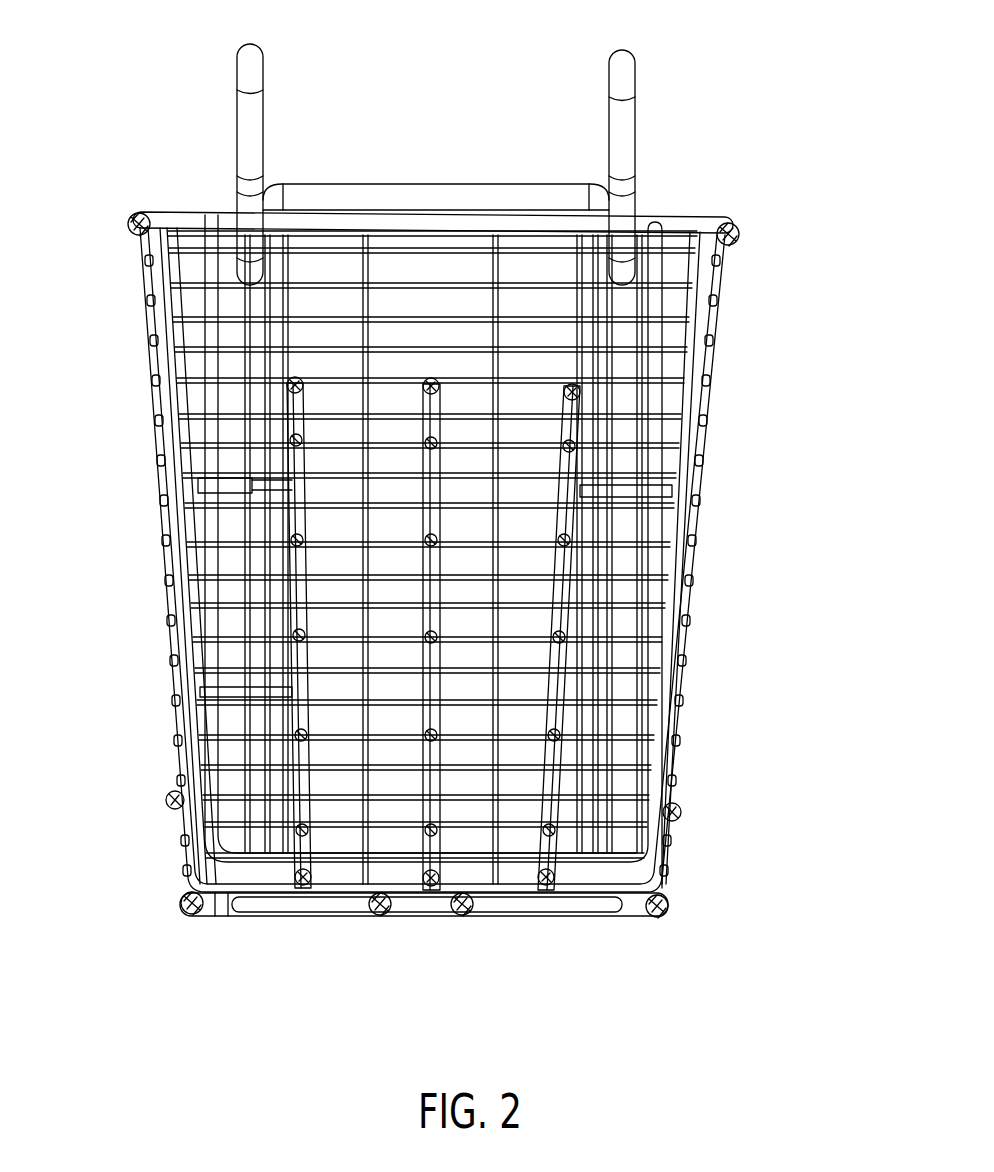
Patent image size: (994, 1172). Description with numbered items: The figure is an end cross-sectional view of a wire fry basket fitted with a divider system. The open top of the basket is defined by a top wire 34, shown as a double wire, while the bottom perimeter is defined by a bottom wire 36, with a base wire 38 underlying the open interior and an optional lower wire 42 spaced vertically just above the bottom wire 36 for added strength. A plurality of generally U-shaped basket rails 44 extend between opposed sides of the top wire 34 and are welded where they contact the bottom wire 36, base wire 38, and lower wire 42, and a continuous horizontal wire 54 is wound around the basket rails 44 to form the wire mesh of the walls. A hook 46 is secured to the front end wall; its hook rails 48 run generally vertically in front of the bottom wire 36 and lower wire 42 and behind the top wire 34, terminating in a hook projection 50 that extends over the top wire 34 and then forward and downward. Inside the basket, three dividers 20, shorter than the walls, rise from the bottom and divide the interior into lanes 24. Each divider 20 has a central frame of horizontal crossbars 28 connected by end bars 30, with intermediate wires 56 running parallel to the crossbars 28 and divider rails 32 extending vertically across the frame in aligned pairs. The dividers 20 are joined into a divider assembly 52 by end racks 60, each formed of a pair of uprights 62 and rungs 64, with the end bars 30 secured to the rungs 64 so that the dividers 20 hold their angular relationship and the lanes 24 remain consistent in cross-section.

The divider 20 is at (302, 367).
The lane 24 is at (240, 378).
The horizontal crossbar 28 is at (290, 396).
The end bar 30 is at (282, 626).
The divider rail 32 is at (292, 483).
The top wire 34 is at (128, 218).
The bottom wire 36 is at (196, 914).
The base wire 38 is at (355, 912).
The lower wire 42 is at (168, 806).
The basket rail 44 is at (165, 541).
The hook 46 is at (680, 100).
The hook rail 48 is at (212, 332).
The hook projection 50 is at (445, 190).
The divider assembly 52 is at (464, 362).
The continuous horizontal wire 54 is at (700, 556).
The intermediate wire 56 is at (290, 441).
The end rack 60 is at (620, 460).
The upright 62 is at (205, 366).
The rung 64 is at (290, 545).